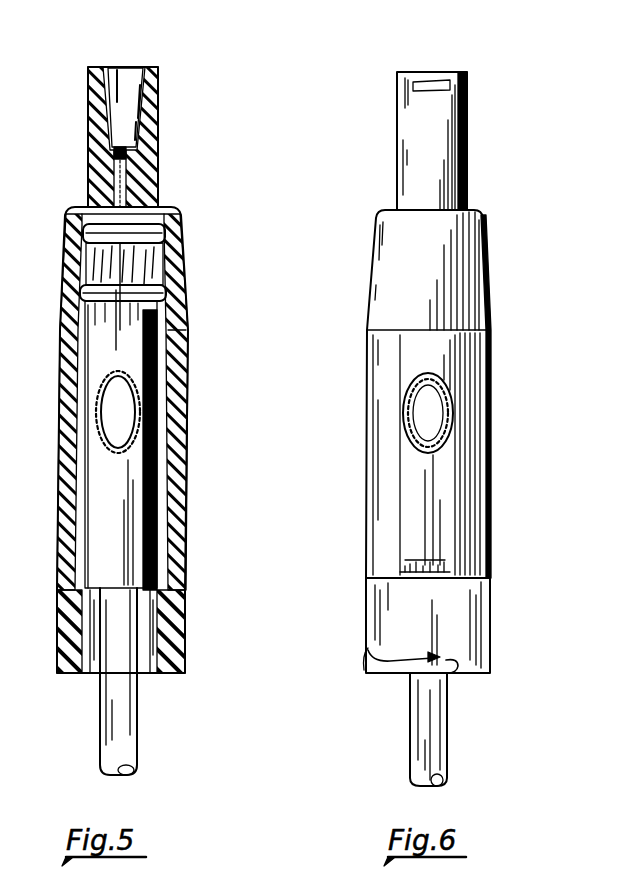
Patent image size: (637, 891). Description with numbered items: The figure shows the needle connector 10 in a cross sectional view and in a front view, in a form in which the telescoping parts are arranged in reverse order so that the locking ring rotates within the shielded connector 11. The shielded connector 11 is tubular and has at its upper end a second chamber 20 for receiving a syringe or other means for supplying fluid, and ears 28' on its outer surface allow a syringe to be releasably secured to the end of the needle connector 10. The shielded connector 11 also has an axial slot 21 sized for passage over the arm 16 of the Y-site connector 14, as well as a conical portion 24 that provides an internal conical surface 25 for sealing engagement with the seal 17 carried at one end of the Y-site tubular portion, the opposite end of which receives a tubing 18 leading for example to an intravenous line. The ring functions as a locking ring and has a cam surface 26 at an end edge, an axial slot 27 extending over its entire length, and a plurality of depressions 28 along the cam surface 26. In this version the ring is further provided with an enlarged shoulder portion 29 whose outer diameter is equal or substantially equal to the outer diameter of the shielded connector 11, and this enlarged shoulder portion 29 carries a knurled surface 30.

In FIG. 5, the needle connector 10 is at (30, 163).
In FIG. 6, the needle connector 10 is at (336, 126).
In FIG. 5, the shielded connector 11 is at (88, 110).
In FIG. 6, the shielded connector 11 is at (488, 260).
In FIG. 5, the Y-site connector 14 is at (157, 515).
In FIG. 5, the arm 16 is at (100, 386).
In FIG. 6, the arm 16 is at (440, 395).
In FIG. 5, the seal 17 is at (82, 238).
In FIG. 5, the tubing 18 is at (137, 737).
In FIG. 5, the second chamber 20 is at (133, 67).
In FIG. 6, the axial slot 21 is at (445, 492).
In FIG. 5, the conical portion 24 is at (66, 290).
In FIG. 5, the internal conical surface 25 is at (190, 328).
In FIG. 5, the cam surface 26 is at (75, 432).
In FIG. 6, the cam surface 26 is at (453, 430).
In FIG. 6, the axial slot 27 is at (433, 685).
In FIG. 6, the depressions 28 is at (374, 423).
In FIG. 6, the ears 28' is at (437, 56).
In FIG. 5, the enlarged shoulder portion 29 is at (185, 607).
In FIG. 6, the knurled surface 30 is at (372, 607).